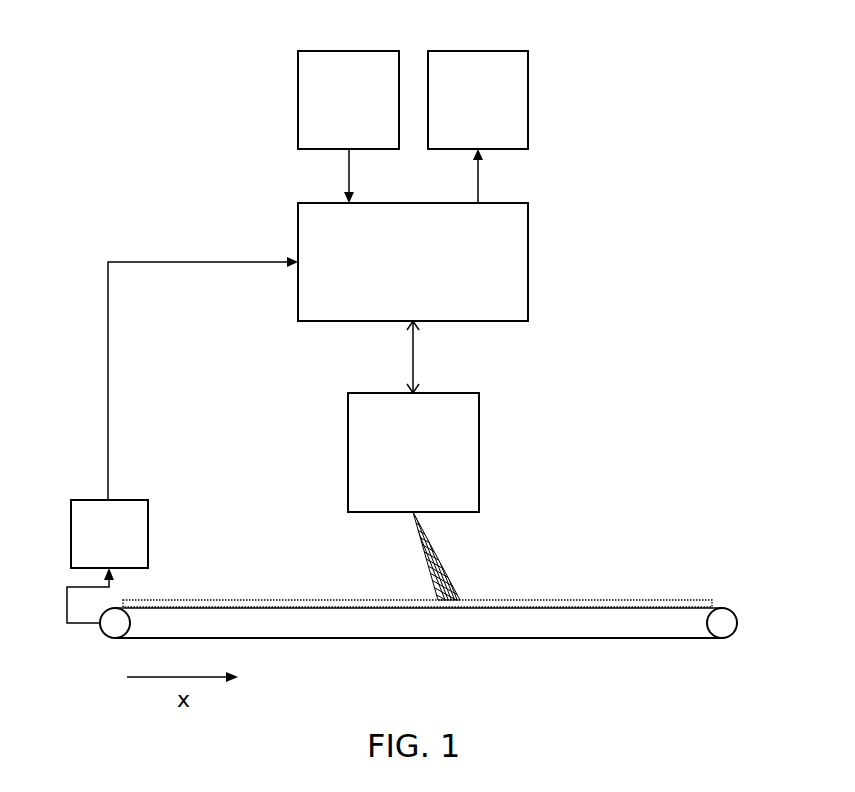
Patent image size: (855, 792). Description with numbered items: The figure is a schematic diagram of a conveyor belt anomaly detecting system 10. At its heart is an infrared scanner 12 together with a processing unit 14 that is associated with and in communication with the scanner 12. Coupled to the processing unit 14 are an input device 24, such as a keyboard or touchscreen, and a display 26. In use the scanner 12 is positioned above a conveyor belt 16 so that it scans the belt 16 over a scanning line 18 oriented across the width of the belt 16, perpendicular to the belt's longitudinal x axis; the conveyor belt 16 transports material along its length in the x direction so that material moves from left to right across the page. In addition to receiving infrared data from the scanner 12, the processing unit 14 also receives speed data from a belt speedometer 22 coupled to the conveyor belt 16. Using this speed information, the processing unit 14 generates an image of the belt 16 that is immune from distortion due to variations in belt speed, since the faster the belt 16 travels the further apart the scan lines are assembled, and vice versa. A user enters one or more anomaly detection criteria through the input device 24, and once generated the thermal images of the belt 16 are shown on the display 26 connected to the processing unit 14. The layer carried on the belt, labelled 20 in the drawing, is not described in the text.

The conveyor belt anomaly detecting system 10 is at (228, 156).
The infrared scanner 12 is at (479, 422).
The processing unit 14 is at (528, 240).
The conveyor belt 16 is at (494, 621).
The scanning line 18 is at (428, 568).
The film / web 20 is at (610, 600).
The belt speedometer 22 is at (148, 517).
The input device 24 is at (298, 108).
The display 26 is at (528, 85).